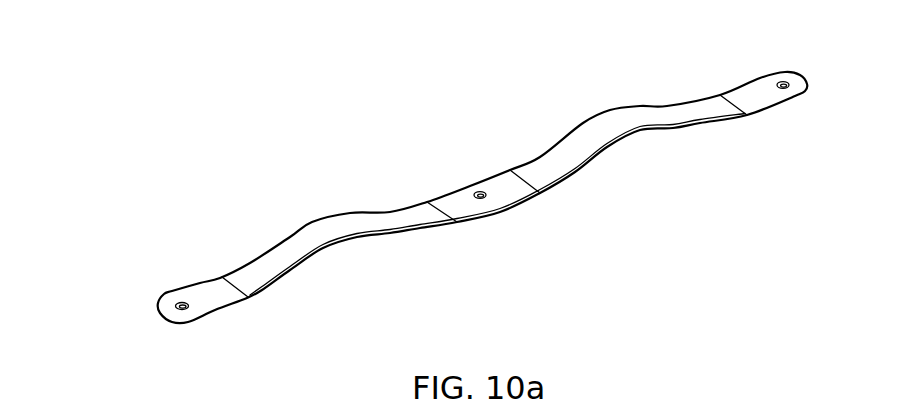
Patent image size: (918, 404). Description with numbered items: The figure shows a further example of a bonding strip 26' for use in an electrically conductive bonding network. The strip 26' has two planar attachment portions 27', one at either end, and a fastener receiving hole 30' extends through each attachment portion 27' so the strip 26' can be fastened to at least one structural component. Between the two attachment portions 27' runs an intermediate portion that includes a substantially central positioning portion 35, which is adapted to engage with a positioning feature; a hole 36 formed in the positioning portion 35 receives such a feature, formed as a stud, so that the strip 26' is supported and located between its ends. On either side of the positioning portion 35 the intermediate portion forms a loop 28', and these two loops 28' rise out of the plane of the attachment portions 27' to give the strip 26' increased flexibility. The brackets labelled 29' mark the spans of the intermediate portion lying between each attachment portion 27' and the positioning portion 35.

The bonding strip 26' is at (483, 177).
The planar attachment portion 27' is at (458, 164).
The loop 28' is at (426, 170).
The intermediate span section 29' is at (509, 242).
The fastener receiving hole 30' is at (483, 213).
The positioning portion 35 is at (473, 221).
The hole 36 is at (487, 198).